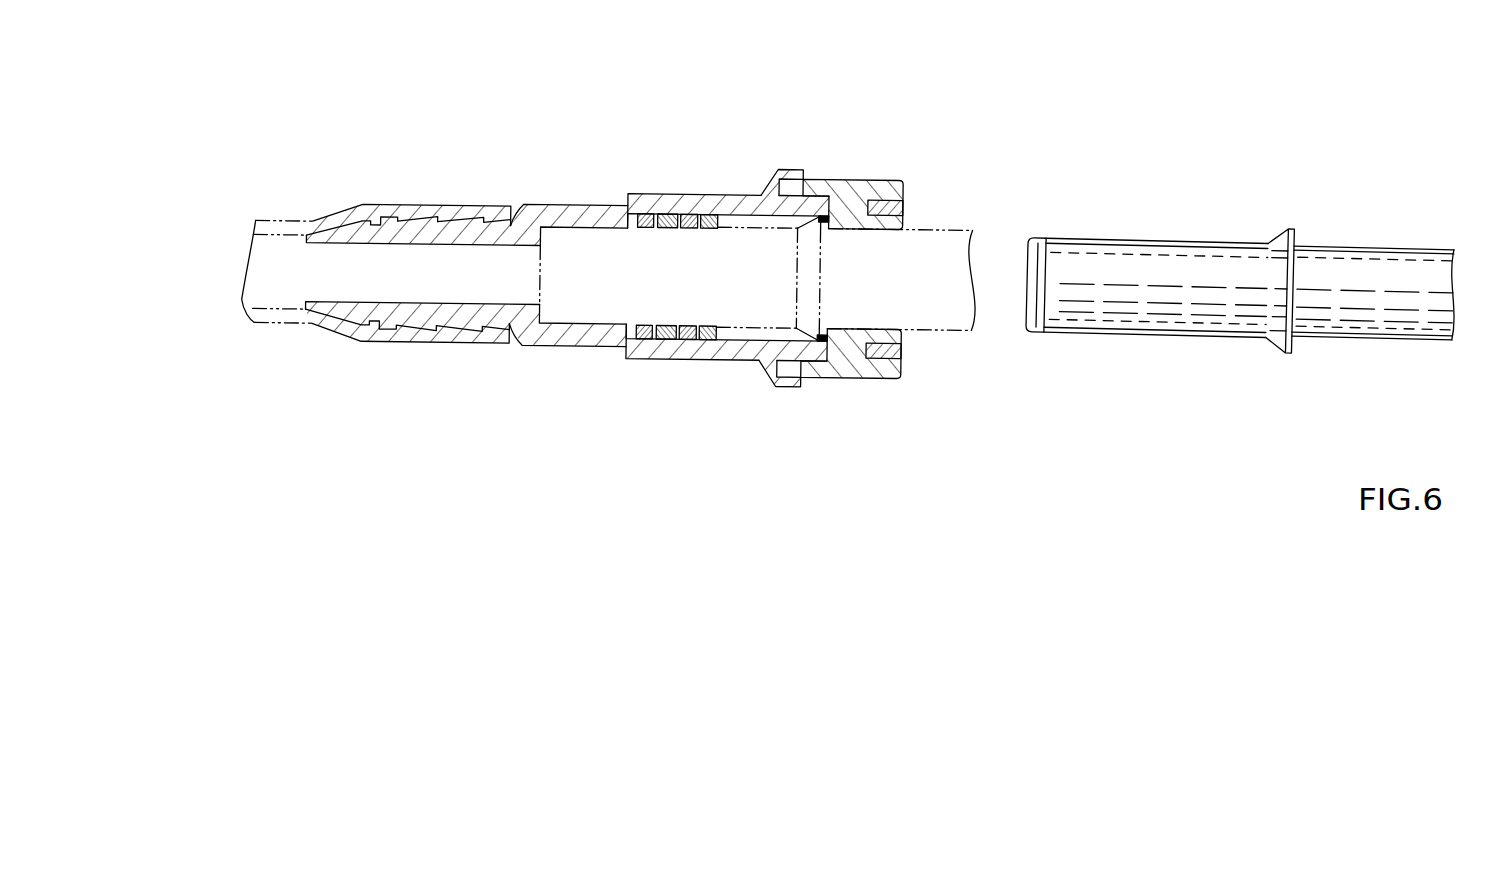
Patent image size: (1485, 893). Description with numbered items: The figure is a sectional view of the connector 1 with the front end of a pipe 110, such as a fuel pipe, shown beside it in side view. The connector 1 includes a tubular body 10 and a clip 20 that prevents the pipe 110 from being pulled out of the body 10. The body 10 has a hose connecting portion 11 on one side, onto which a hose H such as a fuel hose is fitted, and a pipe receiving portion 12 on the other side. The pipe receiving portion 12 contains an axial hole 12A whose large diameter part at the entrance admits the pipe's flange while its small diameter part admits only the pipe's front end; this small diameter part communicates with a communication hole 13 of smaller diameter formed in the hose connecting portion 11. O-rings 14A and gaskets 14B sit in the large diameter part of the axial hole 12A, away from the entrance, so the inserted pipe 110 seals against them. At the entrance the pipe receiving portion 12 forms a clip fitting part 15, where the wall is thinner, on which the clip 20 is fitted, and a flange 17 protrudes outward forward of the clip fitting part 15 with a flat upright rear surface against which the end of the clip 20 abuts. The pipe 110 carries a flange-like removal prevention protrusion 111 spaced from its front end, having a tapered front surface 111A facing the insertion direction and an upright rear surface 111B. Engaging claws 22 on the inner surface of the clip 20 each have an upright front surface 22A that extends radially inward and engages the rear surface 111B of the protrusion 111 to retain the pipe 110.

The connector 1 is at (740, 84).
The tubular body 10 is at (567, 212).
The hose connecting portion 11 is at (423, 313).
The pipe receiving portion 12 is at (613, 346).
The axial hole 12A is at (613, 275).
The communication hole 13 is at (347, 275).
The O-rings 14A is at (683, 347).
The gaskets 14B is at (708, 327).
The clip fitting part 15 is at (903, 186).
The flange 17 is at (783, 378).
The clip 20 is at (828, 182).
The engaging claws 22 is at (850, 210).
The front surface 22A is at (820, 224).
The pipe 110 is at (945, 290).
The removal prevention protrusion 111 is at (746, 347).
The tapered front surface 111A is at (1272, 298).
The upright rear surface 111B is at (820, 303).
The hose H is at (248, 268).